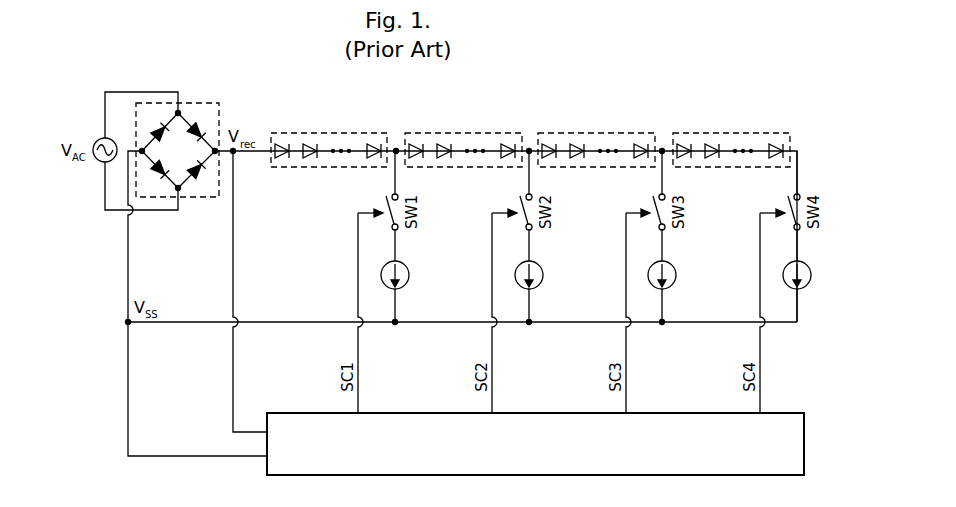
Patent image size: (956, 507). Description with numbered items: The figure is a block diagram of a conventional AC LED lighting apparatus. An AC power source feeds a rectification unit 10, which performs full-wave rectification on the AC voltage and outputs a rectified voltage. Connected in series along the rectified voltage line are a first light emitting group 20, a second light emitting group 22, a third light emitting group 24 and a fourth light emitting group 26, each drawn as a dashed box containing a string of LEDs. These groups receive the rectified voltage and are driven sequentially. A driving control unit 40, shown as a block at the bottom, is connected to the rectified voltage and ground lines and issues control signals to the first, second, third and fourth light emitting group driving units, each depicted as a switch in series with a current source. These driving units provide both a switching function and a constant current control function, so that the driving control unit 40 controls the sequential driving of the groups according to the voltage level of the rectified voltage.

The rectification unit 10 is at (205, 103).
The first light emitting group 20 is at (330, 133).
The second light emitting group 22 is at (463, 133).
The third light emitting group 24 is at (597, 133).
The fourth light emitting group 26 is at (731, 133).
The driving control unit 40 is at (289, 413).